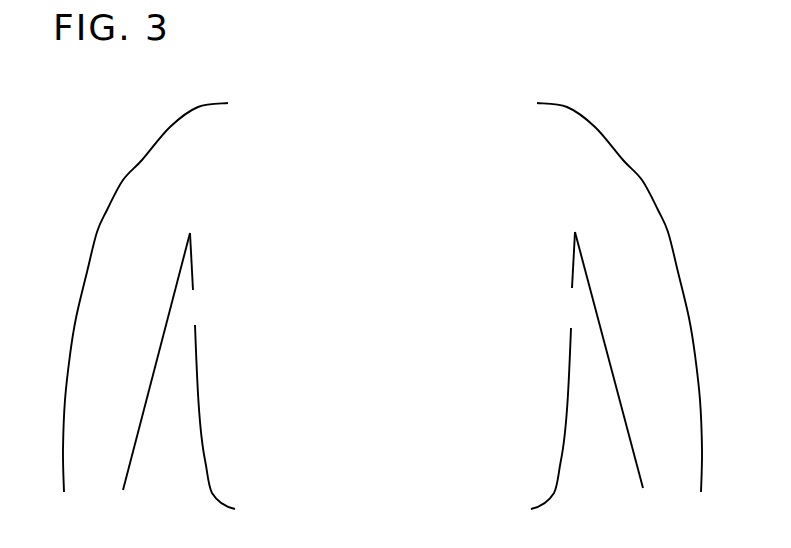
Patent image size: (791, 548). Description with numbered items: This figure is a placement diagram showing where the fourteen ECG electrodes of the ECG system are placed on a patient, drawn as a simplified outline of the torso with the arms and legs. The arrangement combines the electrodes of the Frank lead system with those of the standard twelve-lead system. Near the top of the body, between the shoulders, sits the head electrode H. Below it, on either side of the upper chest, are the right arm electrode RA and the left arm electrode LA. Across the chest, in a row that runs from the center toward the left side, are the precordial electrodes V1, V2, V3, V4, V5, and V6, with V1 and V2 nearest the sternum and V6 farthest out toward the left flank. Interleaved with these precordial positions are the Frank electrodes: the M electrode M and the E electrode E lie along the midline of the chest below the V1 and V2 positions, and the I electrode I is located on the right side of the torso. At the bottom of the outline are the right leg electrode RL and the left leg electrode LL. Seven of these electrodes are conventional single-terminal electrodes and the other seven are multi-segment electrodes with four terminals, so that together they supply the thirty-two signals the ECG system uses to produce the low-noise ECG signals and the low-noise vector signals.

The H electrode H is at (385, 127).
The RA electrode RA is at (270, 184).
The LA electrode LA is at (497, 182).
The V1 electrode V1 is at (368, 244).
The V2 electrode V2 is at (423, 244).
The V3 electrode V3 is at (445, 275).
The V4 electrode V4 is at (473, 305).
The V5 electrode V5 is at (521, 307).
The V6 electrode V6 is at (573, 307).
The M electrode M is at (386, 275).
The E electrode E is at (383, 305).
The I electrode I is at (204, 304).
The RL electrode RL is at (262, 457).
The LL electrode LL is at (502, 457).